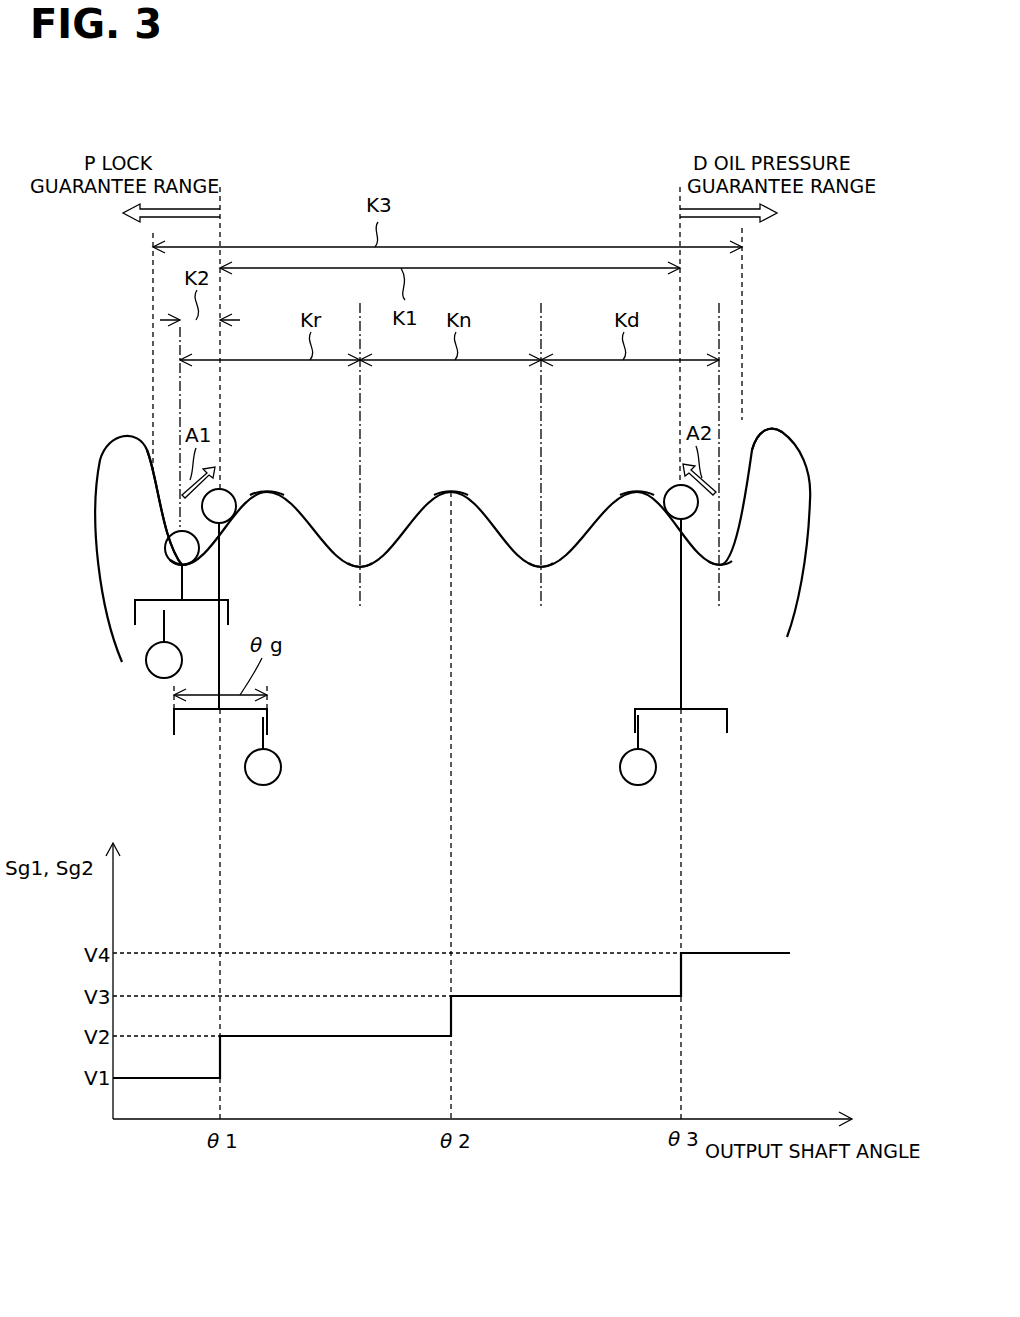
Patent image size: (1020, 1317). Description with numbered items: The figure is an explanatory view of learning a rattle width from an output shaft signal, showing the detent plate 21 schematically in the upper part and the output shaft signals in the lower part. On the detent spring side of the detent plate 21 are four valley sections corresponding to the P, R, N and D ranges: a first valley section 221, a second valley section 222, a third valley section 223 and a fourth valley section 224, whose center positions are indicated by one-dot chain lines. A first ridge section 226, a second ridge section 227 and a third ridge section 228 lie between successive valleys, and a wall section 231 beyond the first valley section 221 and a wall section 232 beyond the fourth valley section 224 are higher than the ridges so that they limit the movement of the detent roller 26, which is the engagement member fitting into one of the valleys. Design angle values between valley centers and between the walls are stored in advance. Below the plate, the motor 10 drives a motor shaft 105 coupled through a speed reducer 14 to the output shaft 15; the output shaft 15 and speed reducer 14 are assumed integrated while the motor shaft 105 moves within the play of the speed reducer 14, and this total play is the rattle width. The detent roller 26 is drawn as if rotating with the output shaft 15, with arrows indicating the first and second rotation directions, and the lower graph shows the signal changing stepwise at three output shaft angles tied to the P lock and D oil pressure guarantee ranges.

The motor 10 is at (148, 670).
The speed reducer 14 is at (133, 612).
The output shaft 15 is at (178, 585).
The detent plate 21 is at (812, 478).
The detent roller 26 is at (168, 550).
The motor shaft 105 is at (162, 626).
The first valley section 221 is at (202, 548).
The second valley section 222 is at (358, 565).
The third valley section 223 is at (539, 565).
The fourth valley section 224 is at (724, 566).
The first ridge section 226 is at (267, 492).
The second ridge section 227 is at (451, 492).
The third ridge section 228 is at (637, 492).
The wall section 231 is at (130, 445).
The wall section 232 is at (768, 432).